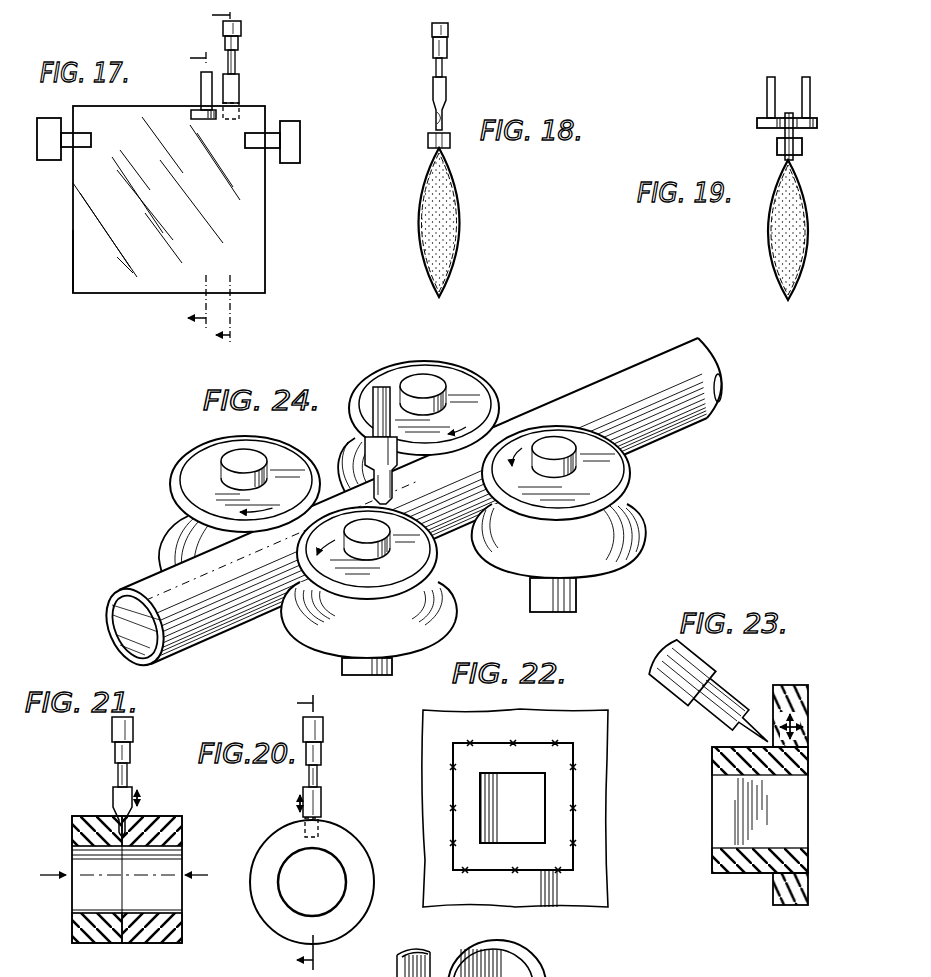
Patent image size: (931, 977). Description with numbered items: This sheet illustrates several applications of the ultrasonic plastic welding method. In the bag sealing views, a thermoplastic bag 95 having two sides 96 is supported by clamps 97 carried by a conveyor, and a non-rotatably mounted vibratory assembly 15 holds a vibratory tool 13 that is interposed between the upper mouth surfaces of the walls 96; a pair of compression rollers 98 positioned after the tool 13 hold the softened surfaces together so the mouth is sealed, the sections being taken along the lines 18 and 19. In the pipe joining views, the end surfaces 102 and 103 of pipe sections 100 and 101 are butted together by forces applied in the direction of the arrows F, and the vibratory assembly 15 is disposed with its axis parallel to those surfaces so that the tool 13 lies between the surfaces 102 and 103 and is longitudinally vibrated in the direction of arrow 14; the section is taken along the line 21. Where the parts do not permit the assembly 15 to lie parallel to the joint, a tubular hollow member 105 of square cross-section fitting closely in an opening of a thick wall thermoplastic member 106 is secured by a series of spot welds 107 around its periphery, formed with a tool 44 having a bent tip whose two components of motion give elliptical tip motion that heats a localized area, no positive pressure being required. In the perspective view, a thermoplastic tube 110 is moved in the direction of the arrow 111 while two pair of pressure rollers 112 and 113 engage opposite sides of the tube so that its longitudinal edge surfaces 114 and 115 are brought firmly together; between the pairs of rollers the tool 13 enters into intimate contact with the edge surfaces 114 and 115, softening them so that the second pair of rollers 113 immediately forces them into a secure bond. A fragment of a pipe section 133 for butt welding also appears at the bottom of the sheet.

In FIG. 17, the vibratory tool 13 is at (240, 84).
In FIG. 18, the vibratory tool 13 is at (450, 85).
In FIG. 24, the vibratory tool 13 is at (358, 443).
In FIG. 21, the vibratory tool 13 is at (133, 790).
In FIG. 20, the vibratory tool 13 is at (322, 797).
In FIG. 17, the vibratory assembly 15 is at (243, 30).
In FIG. 18, the vibratory assembly 15 is at (450, 32).
In FIG. 21, the vibratory assembly 15 is at (134, 735).
In FIG. 20, the vibratory assembly 15 is at (324, 735).
In FIG. 23, the vibratory assembly 15 is at (694, 651).
In FIG. 21, the arrow 14 is at (141, 798).
In FIG. 20, the arrow 14 is at (298, 804).
In FIG. 17, the section line 18 is at (206, 183).
In FIG. 17, the section line 19 is at (183, 190).
In FIG. 20, the section line 21 is at (290, 832).
In FIG. 23, the tool having a bent tip 44 is at (758, 737).
In FIG. 17, the bag 95 is at (250, 240).
In FIG. 18, the bag 95 is at (416, 268).
In FIG. 19, the bag 95 is at (767, 275).
In FIG. 17, the sides 96 is at (262, 269).
In FIG. 18, the sides 96 is at (415, 200).
In FIG. 19, the sides 96 is at (768, 205).
In FIG. 17, the clamps 97 is at (270, 135).
In FIG. 19, the clamps 97 is at (777, 148).
In FIG. 17, the compression rollers 98 is at (200, 108).
In FIG. 19, the compression rollers 98 is at (757, 123).
In FIG. 21, the pipe section 100 is at (72, 838).
In FIG. 20, the pipe section 101 is at (356, 912).
In FIG. 21, the end surface 102 is at (118, 815).
In FIG. 21, the end surface 103 is at (130, 816).
In FIG. 22, the tubular hollow member 105 is at (557, 827).
In FIG. 23, the tubular hollow member 105 is at (762, 876).
In FIG. 22, the thick wall thermoplastic member 106 is at (492, 720).
In FIG. 23, the thick wall thermoplastic member 106 is at (776, 898).
In FIG. 22, the spot welds 107 is at (555, 743).
In FIG. 24, the thermoplastic tube 110 is at (530, 408).
In FIG. 24, the arrow 111 is at (588, 372).
In FIG. 24, the pressure rollers 112 is at (480, 395).
In FIG. 24, the pressure rollers 113 is at (263, 448).
In FIG. 24, the longitudinal edge surface 114 is at (352, 497).
In FIG. 24, the longitudinal edge surface 115 is at (452, 520).
In FIG. 22, the pipe section 133 is at (510, 955).